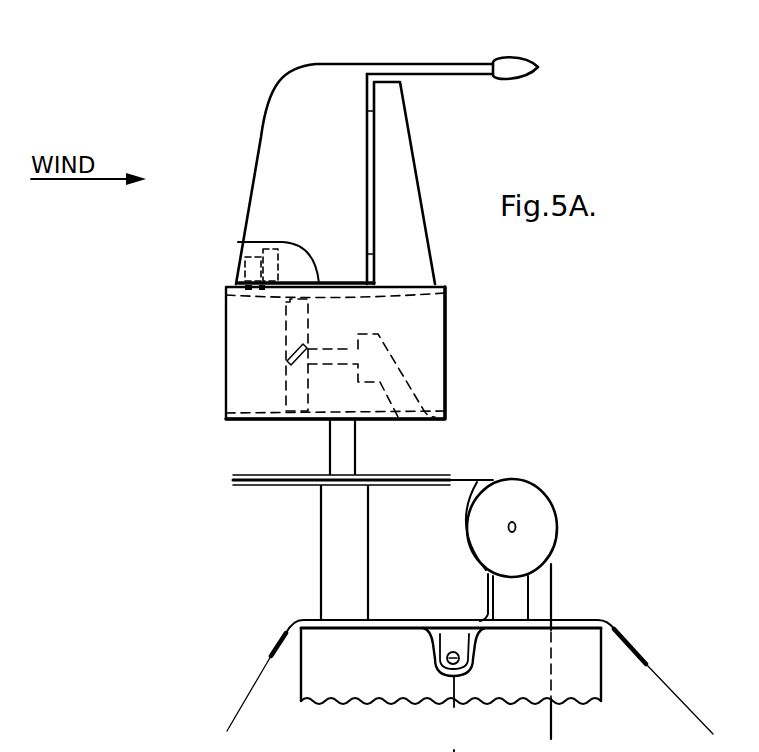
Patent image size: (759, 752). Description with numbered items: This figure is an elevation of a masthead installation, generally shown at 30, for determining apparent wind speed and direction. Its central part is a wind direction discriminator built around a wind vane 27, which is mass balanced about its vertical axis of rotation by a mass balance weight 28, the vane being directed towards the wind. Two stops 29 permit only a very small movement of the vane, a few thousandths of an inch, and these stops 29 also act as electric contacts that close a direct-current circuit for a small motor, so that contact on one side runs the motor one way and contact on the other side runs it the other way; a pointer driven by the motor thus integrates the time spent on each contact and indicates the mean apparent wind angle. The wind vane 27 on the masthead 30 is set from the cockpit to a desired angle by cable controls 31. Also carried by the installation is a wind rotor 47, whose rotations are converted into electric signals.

The wind vane 27 is at (260, 133).
The mass balance weight 28 is at (508, 58).
The stops 29 is at (248, 263).
The wind rotor 47 is at (292, 320).
The cable controls 31 is at (470, 477).
The masthead 30 is at (613, 625).